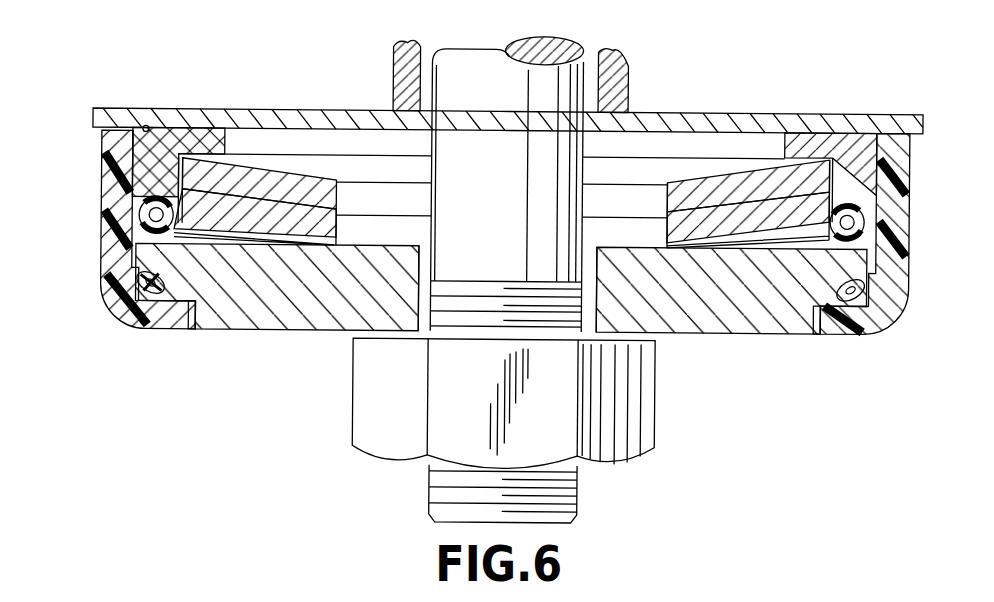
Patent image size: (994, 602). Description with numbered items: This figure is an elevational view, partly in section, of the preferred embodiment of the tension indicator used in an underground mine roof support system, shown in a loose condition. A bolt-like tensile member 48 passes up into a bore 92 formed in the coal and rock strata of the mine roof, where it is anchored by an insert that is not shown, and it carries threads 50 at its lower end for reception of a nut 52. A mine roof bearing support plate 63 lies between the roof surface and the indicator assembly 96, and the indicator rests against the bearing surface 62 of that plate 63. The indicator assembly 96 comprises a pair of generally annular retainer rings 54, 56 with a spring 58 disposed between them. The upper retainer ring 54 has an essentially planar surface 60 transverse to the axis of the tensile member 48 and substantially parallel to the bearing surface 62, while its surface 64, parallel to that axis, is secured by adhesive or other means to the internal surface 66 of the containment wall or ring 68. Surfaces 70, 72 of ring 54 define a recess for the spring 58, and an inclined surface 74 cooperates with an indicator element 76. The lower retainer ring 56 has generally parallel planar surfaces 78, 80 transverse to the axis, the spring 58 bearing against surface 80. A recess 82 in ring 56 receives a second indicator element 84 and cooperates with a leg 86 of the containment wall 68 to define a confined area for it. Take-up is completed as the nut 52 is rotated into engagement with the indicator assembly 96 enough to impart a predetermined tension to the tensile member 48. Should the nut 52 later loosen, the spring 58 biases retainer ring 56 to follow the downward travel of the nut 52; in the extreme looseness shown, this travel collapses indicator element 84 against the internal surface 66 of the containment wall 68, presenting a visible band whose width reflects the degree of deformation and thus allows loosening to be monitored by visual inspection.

The tensile member 48 is at (481, 176).
The threads 50 is at (452, 478).
The nut 52 is at (372, 376).
The retainer ring 54 is at (190, 145).
The retainer ring 56 is at (335, 315).
The spring 58 is at (262, 183).
The planar surface 60 is at (180, 208).
The bearing surface 62 is at (309, 130).
The plate 63 is at (367, 118).
The surface 64 is at (135, 147).
The internal surface 66 is at (135, 177).
The containment wall 68 is at (112, 240).
The surface 70 is at (207, 157).
The surface 72 is at (148, 126).
The inclined surface 74 is at (138, 207).
The indicator element 76 is at (178, 222).
The planar surface 78 is at (215, 330).
The planar surface 80 is at (380, 241).
The recess 82 is at (167, 286).
The indicator element 84 is at (140, 288).
The leg 86 is at (165, 322).
The bore 92 is at (393, 48).
The indicator assembly 96 is at (862, 345).